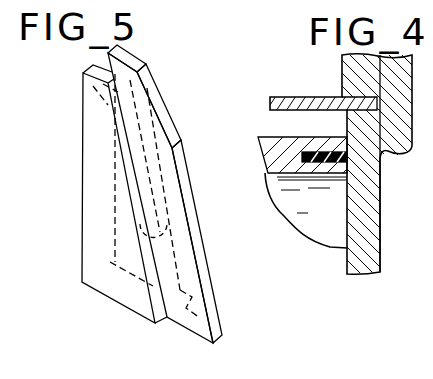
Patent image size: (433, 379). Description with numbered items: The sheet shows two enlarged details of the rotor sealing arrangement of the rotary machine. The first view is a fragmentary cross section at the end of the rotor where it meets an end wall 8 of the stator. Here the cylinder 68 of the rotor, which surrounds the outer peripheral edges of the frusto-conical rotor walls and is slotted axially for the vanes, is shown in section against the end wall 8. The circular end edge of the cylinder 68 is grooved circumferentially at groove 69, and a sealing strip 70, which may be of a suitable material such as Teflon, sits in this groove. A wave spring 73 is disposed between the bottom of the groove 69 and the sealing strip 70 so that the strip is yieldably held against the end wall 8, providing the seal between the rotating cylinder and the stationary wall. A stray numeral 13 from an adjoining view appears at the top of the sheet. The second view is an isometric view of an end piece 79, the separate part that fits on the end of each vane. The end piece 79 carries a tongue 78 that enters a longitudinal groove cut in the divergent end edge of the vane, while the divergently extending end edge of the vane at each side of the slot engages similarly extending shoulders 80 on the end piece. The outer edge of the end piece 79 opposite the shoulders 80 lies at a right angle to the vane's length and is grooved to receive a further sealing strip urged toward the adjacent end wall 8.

In FIG. 4, the end wall 8 is at (378, 200).
In FIG. 4, the frame member 13 is at (235, 0).
In FIG. 4, the cylinder 68 is at (257, 156).
In FIG. 4, the groove 69 is at (318, 151).
In FIG. 4, the sealing strip 70 is at (312, 197).
In FIG. 4, the wave spring 73 is at (267, 174).
In FIG. 5, the tongue 78 is at (182, 172).
In FIG. 5, the end piece 79 is at (80, 213).
In FIG. 5, the shoulders 80 is at (159, 243).